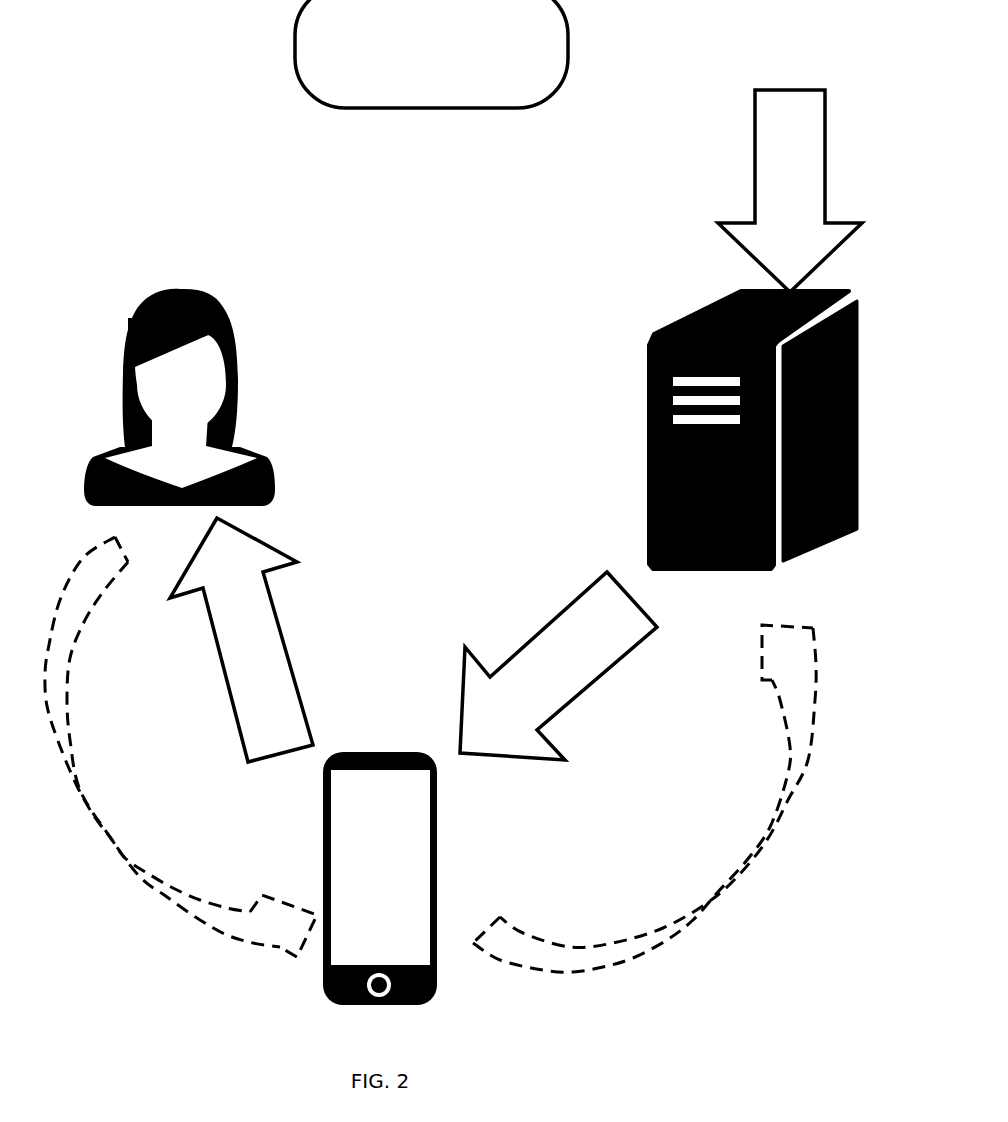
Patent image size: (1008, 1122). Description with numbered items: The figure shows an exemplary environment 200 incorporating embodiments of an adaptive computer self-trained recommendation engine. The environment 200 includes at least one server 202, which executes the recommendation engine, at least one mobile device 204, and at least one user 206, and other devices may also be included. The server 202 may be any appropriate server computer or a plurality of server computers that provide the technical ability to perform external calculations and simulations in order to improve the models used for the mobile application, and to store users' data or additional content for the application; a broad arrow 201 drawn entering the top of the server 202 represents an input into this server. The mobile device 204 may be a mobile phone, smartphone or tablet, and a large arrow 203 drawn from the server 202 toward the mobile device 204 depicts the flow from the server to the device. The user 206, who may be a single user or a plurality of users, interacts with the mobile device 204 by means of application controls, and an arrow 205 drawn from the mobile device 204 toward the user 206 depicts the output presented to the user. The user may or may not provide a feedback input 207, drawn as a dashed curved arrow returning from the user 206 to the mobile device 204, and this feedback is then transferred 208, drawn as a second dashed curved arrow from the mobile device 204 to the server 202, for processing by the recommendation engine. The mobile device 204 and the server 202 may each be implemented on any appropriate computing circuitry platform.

The environment 200 is at (431, 54).
The input arrow to server 201 is at (790, 191).
The server 202 is at (737, 417).
The data transfer from server to mobile device 203 is at (558, 666).
The mobile device 204 is at (380, 860).
The output to user 205 is at (241, 640).
The user 206 is at (179, 377).
The feedback input 207 is at (181, 747).
The transfer 208 is at (644, 798).